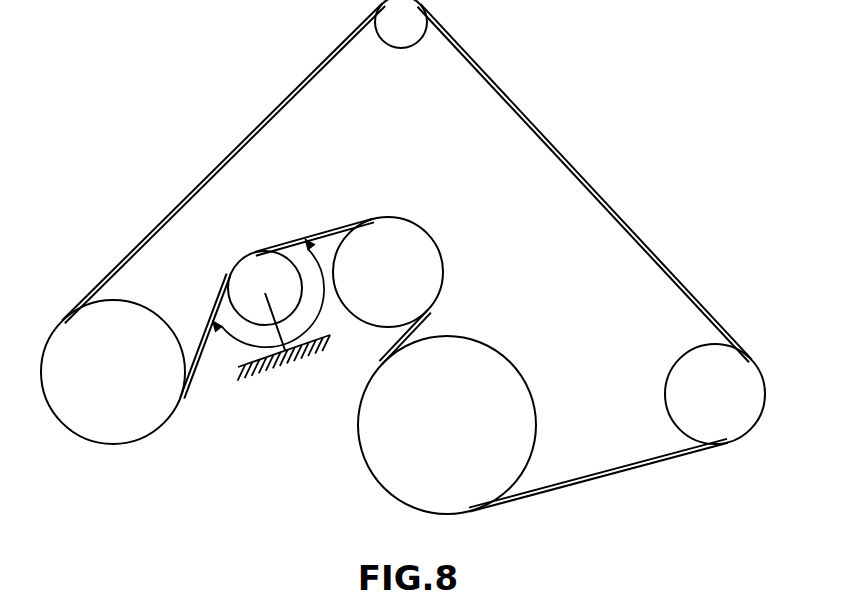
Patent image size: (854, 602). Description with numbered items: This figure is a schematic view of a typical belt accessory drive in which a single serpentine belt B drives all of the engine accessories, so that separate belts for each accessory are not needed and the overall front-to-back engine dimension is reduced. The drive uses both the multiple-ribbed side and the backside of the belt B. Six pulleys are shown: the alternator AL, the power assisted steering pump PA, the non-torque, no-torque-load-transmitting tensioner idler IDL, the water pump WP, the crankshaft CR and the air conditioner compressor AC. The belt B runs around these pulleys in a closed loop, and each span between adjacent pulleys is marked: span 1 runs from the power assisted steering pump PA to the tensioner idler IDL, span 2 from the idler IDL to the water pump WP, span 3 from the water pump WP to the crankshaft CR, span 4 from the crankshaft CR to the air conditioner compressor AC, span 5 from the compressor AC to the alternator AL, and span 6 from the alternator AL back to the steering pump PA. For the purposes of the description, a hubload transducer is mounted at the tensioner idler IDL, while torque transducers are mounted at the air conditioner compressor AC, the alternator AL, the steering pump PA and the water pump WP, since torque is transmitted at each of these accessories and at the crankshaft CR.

The belt span PA to IDL 1 is at (213, 323).
The belt span IDL to WP 2 is at (327, 237).
The belt span WP to CR 3 is at (395, 345).
The belt span CR to AC 4 is at (640, 460).
The belt span AC to AL 5 is at (587, 180).
The belt span AL to PA 6 is at (232, 149).
The belt B is at (407, 257).
The power assisted steering pump pulley PA is at (113, 372).
The tensioner idler IDL is at (265, 300).
The water pump pulley WP is at (388, 272).
The crankshaft pulley CR is at (447, 425).
The air conditioner compressor pulley AC is at (715, 394).
The alternator pulley AL is at (401, 24).